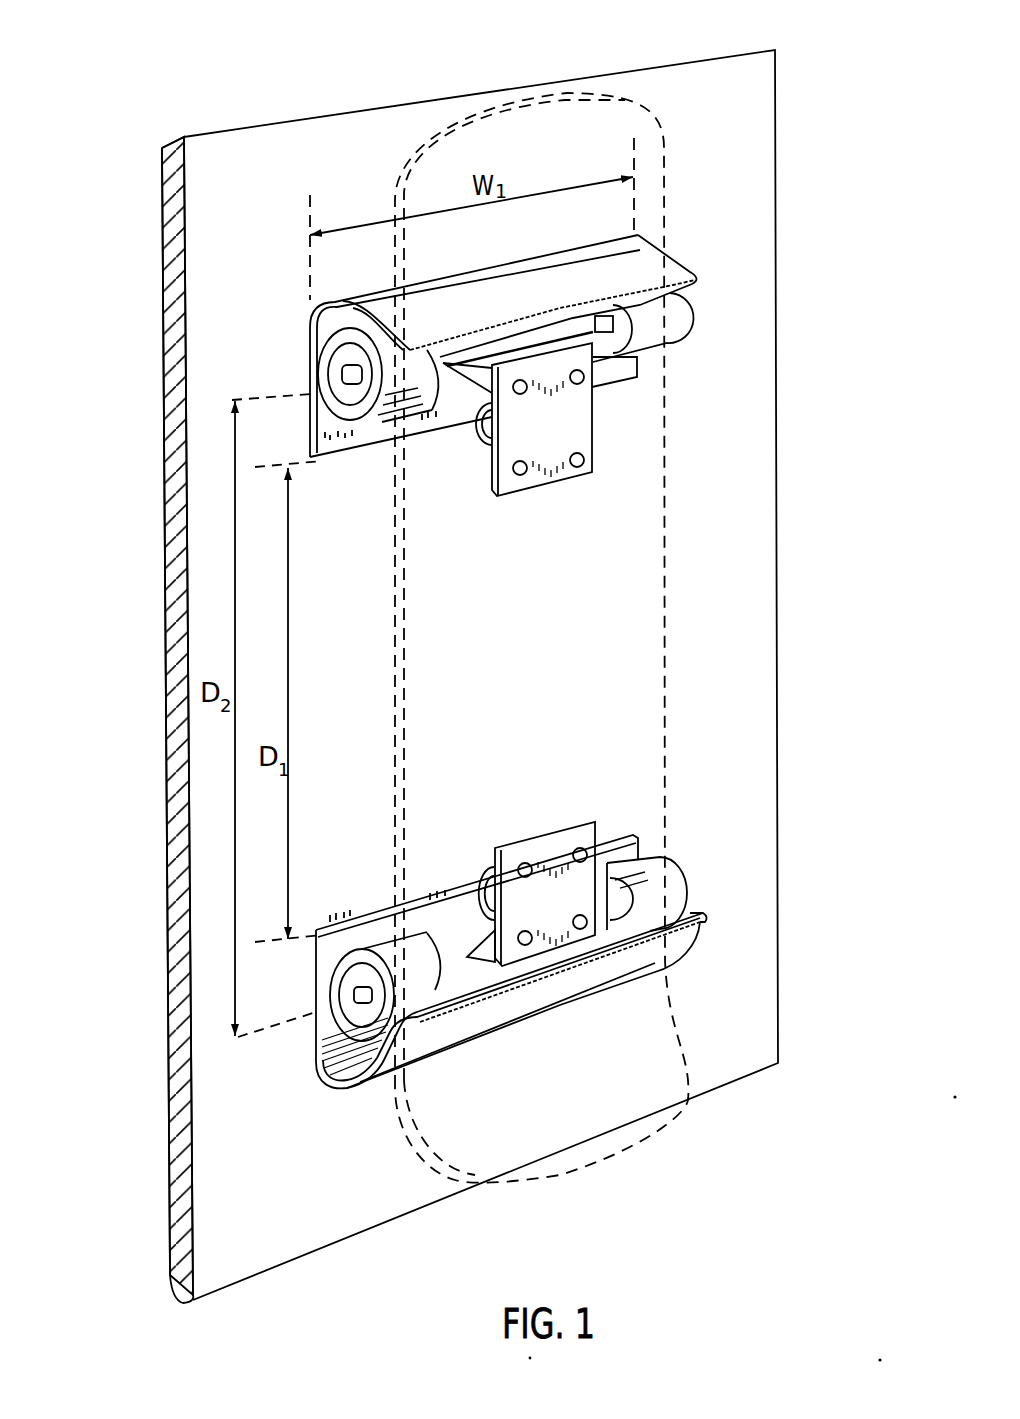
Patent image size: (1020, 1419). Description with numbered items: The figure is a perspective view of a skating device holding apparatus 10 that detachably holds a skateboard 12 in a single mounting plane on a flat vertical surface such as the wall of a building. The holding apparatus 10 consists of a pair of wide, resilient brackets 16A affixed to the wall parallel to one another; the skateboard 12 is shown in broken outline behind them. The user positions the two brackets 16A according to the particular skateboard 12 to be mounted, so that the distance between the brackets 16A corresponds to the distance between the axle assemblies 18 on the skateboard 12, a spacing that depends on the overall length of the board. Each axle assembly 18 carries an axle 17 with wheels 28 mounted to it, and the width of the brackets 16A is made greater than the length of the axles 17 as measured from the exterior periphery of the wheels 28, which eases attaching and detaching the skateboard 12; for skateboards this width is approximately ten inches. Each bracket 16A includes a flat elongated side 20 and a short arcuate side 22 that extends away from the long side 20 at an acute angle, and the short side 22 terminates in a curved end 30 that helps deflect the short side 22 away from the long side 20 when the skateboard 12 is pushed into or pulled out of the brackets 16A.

The skating device holding apparatus 10 is at (527, 545).
The skateboard 12 is at (427, 1163).
The resilient brackets 16A is at (317, 1013).
The axles 17 is at (667, 343).
The axle assemblies 18 is at (565, 397).
The flat elongated sides 20 is at (350, 377).
The short arcuate sides 22 is at (637, 263).
The wheels 28 is at (323, 361).
The curved ends 30 is at (700, 278).